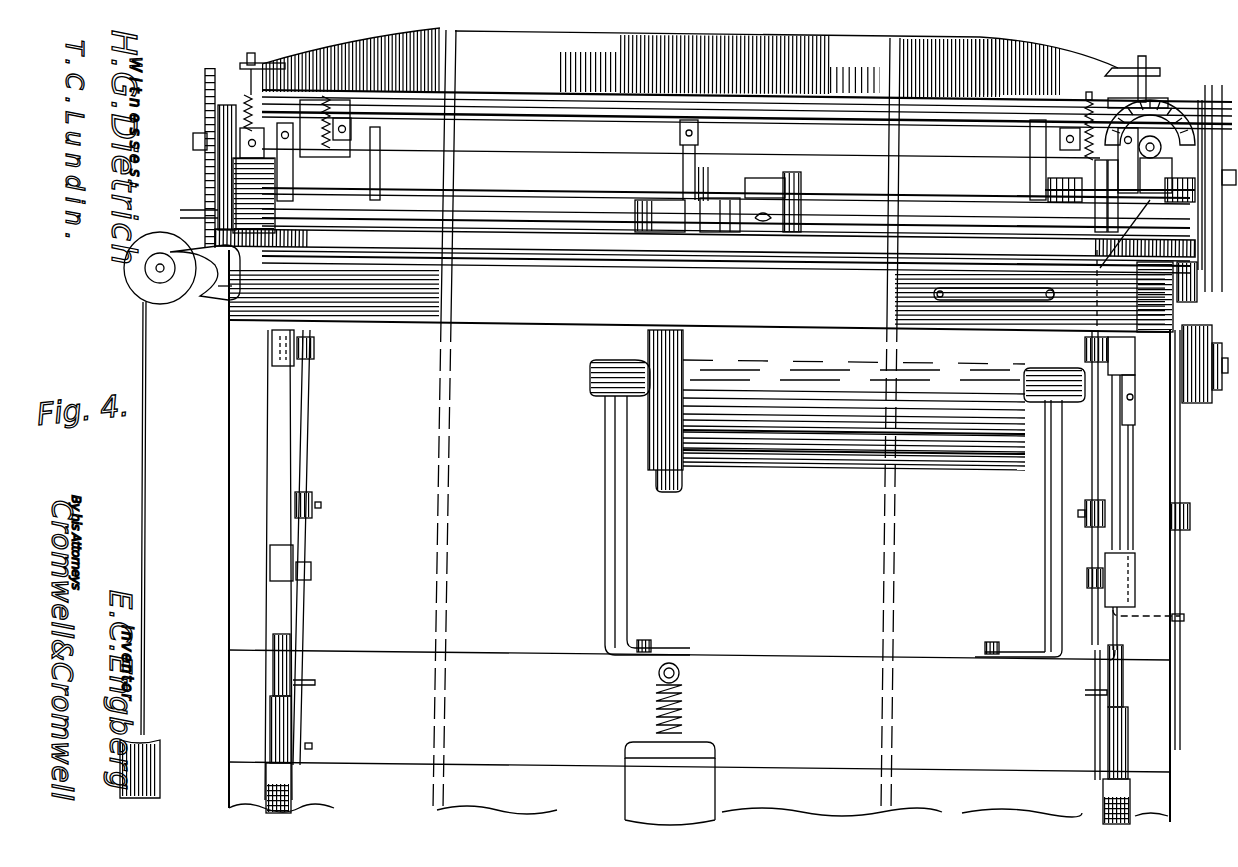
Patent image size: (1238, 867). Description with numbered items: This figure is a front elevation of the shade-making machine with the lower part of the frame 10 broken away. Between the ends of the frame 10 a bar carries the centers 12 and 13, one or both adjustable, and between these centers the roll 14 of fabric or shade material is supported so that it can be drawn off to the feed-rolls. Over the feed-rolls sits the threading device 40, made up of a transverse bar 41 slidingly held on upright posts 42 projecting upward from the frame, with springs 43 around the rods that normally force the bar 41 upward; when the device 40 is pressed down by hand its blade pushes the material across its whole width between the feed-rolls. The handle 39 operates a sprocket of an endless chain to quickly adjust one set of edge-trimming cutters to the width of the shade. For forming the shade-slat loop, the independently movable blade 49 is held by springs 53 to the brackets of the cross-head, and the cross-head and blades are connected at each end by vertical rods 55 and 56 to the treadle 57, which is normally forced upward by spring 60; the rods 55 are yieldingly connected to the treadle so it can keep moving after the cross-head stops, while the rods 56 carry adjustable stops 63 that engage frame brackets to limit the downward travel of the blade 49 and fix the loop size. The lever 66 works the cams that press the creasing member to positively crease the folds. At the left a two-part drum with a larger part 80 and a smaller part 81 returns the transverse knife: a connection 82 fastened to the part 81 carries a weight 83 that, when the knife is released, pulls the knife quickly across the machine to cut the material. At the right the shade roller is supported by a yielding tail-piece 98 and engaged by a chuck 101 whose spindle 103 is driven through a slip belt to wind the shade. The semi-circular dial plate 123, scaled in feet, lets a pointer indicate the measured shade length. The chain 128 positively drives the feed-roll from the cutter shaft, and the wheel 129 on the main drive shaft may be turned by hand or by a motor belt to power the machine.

The frame 10 is at (679, 426).
The center 12 is at (604, 563).
The center 13 is at (1042, 578).
The roll 14 is at (796, 470).
The handle 39 is at (994, 298).
The device 40 is at (747, 64).
The transverse bar 41 is at (1096, 68).
The upright posts 42 is at (252, 63).
The springs 43 is at (246, 103).
The blade 49 is at (535, 170).
The springs 53 is at (324, 150).
The vertical rods 55 is at (284, 530).
The vertical rods 56 is at (308, 454).
The treadle 57 is at (716, 746).
The spring 60 is at (686, 692).
The adjustable stops 63 is at (315, 500).
The lever 66 is at (682, 492).
The drum part 80 is at (153, 236).
The drum part 81 is at (147, 273).
The connection 82 is at (146, 492).
The weight 83 is at (167, 748).
The tail-piece 98 is at (762, 178).
The chuck 101 is at (1040, 190).
The spindle 103 is at (1137, 266).
The dial plate 123 is at (1168, 108).
The chain 128 is at (208, 181).
The wheel 129 is at (1222, 82).